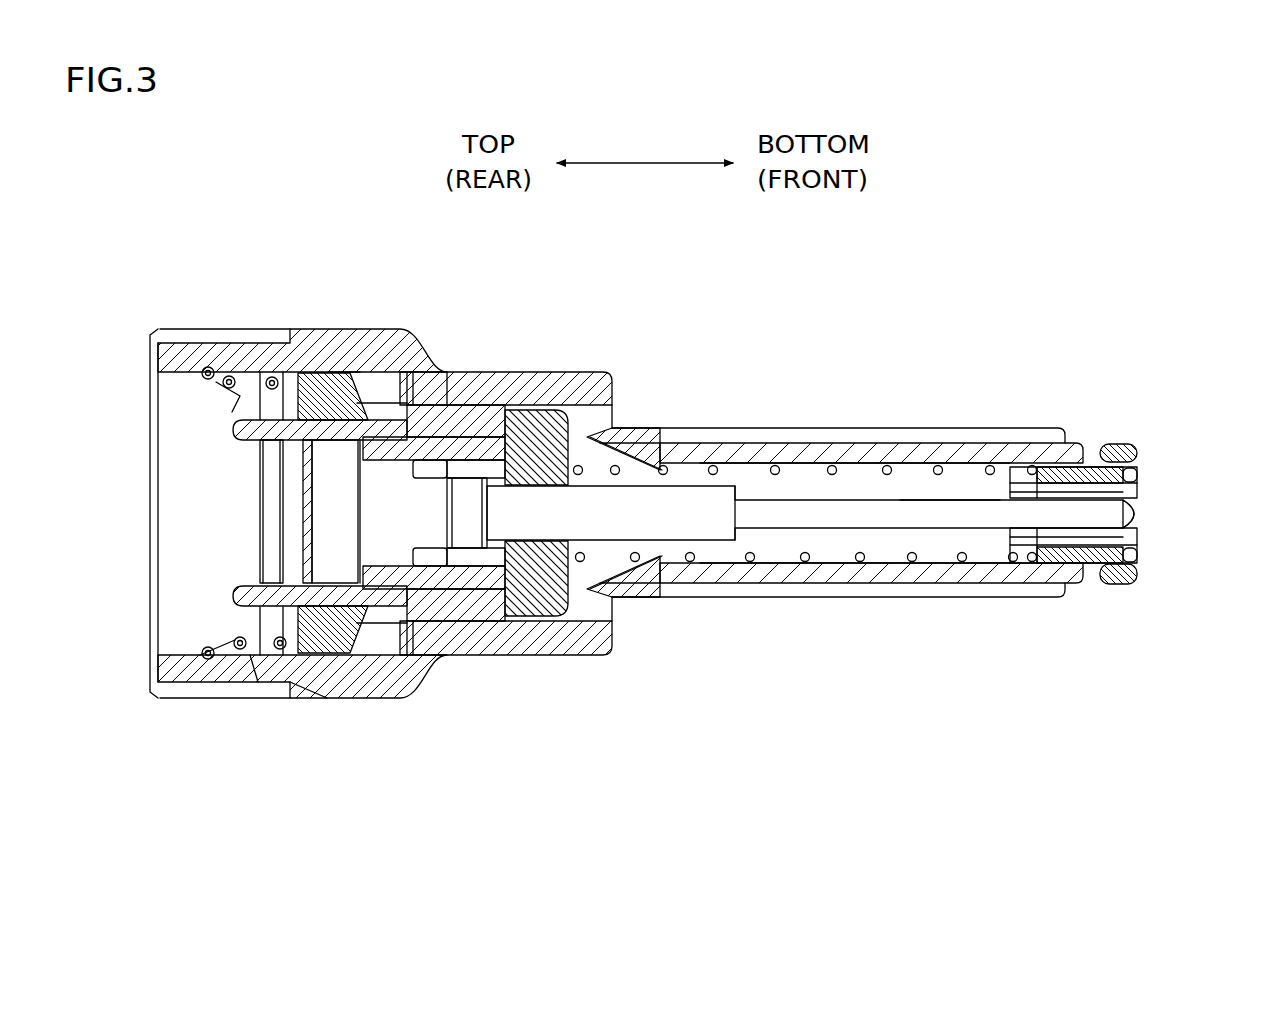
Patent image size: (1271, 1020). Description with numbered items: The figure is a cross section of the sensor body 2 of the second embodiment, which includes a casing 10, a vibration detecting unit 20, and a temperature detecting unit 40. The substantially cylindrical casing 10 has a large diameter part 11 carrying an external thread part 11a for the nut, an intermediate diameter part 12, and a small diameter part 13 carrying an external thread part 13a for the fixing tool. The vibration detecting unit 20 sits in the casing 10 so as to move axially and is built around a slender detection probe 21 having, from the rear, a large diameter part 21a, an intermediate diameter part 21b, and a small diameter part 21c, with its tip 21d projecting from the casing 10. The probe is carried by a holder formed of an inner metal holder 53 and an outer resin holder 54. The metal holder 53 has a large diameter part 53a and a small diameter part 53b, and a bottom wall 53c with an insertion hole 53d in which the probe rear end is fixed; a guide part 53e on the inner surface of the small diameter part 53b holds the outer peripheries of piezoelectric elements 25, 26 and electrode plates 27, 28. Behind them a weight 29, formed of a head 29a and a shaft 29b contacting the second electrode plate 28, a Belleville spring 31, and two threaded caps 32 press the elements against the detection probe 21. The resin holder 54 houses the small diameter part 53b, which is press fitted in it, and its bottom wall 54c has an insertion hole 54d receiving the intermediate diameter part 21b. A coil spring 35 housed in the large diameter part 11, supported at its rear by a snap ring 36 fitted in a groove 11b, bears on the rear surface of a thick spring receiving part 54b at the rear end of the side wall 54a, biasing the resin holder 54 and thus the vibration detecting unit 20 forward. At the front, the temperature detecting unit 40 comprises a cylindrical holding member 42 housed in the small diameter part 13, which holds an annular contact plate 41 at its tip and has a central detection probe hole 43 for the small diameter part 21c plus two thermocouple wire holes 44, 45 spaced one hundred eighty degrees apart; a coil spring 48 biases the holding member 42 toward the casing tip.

The sensor body 2 is at (773, 309).
The casing 10 is at (588, 372).
The large diameter part 11 is at (302, 343).
The external thread part 11a is at (197, 337).
The groove 11b is at (216, 382).
The intermediate diameter part 12 is at (548, 387).
The small diameter part 13 is at (860, 455).
The external thread part 13a is at (933, 448).
The vibration detecting unit 20 is at (275, 628).
The detection probe 21 is at (828, 530).
The large diameter part 21a is at (485, 600).
The intermediate diameter part 21b is at (612, 605).
The small diameter part 21c is at (934, 516).
The tip 21d is at (1148, 514).
The piezoelectric element 25 is at (500, 455).
The piezoelectric element 26 is at (465, 455).
The electrode plate 27 is at (457, 620).
The second electrode plate 28 is at (425, 640).
The weight 29 is at (346, 764).
The head 29a is at (258, 690).
The shaft 29b is at (322, 700).
The Belleville spring 31 is at (287, 537).
The caps 32 is at (287, 525).
The coil spring 35 is at (228, 412).
The snap ring 36 is at (200, 655).
The temperature detecting unit 40 is at (1147, 472).
The contact plate 41 is at (1147, 543).
The holding member 42 is at (1078, 465).
The detection probe hole 43 is at (1078, 560).
The thermocouple wire hole 44 is at (1115, 450).
The thermocouple wire hole 45 is at (1080, 560).
The coil spring 48 is at (755, 560).
The metal holder 53 is at (262, 418).
The large diameter part 53a is at (311, 375).
The small diameter part 53b is at (398, 415).
The bottom wall 53c is at (522, 440).
The insertion hole 53d is at (518, 600).
The guide part 53e is at (395, 655).
The resin holder 54 is at (605, 395).
The side wall 54a is at (447, 390).
The spring receiving part 54b is at (345, 372).
The bottom wall 54c is at (560, 615).
The insertion hole 54d is at (578, 470).